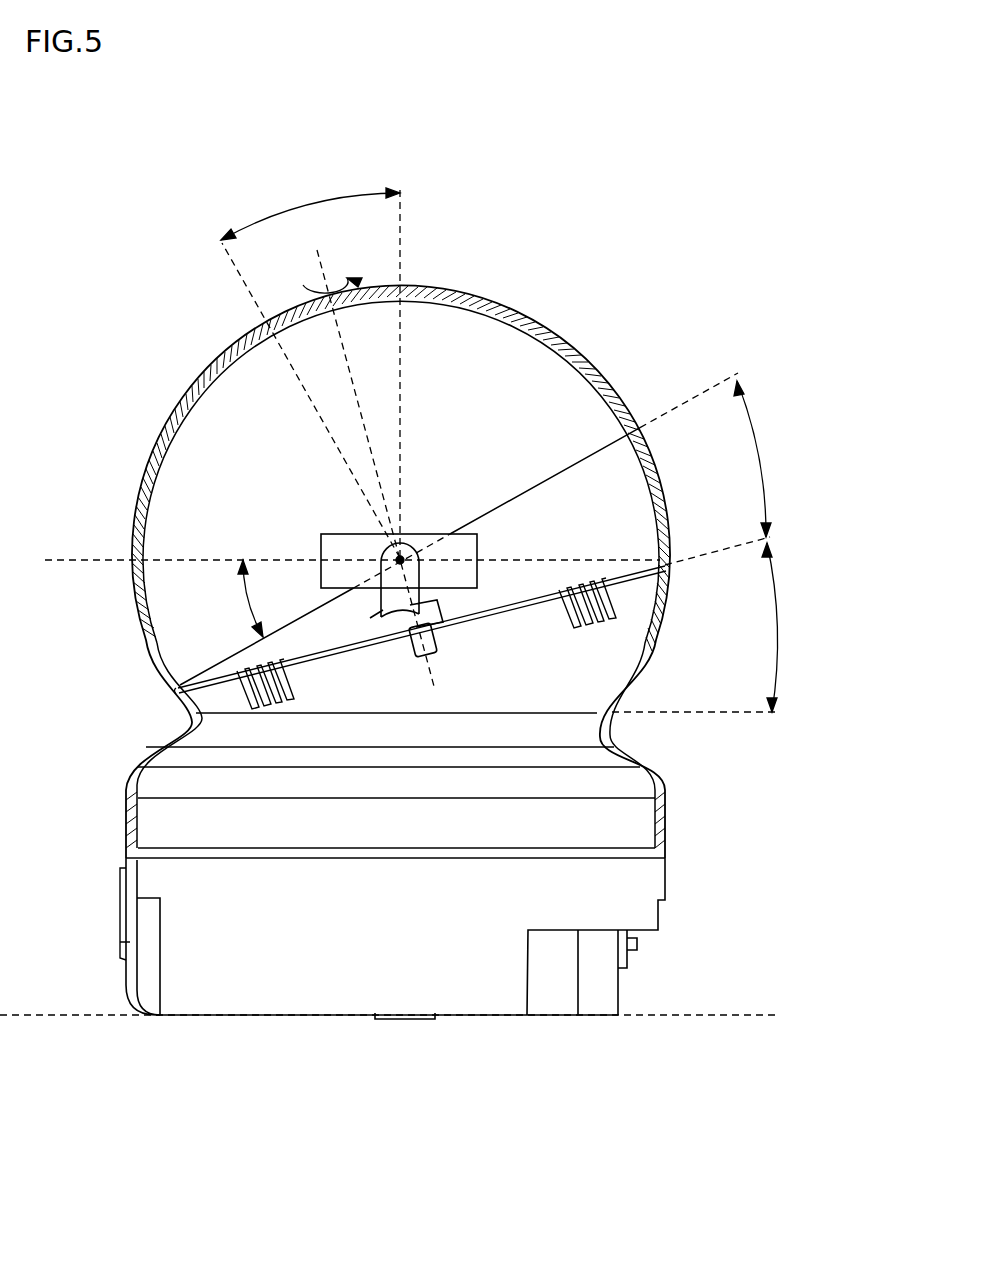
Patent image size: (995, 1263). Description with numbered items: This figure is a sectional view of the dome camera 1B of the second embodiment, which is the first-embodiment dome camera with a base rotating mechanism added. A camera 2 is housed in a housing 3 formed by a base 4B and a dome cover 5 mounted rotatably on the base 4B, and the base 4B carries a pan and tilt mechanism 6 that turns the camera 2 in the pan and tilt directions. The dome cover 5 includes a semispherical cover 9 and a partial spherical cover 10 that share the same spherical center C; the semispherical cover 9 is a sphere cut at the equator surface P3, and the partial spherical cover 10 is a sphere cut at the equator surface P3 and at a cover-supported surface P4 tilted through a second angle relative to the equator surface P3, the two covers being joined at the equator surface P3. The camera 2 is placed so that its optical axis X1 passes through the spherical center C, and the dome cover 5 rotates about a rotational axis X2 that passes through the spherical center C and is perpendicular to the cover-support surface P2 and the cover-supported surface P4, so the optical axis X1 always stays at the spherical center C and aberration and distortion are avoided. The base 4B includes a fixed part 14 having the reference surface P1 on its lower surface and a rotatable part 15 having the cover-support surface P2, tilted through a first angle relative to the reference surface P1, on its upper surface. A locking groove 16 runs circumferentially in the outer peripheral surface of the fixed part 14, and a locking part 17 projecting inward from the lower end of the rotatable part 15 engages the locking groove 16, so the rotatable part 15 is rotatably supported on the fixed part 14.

The dome camera 1B is at (643, 183).
The camera 2 is at (340, 534).
The housing 3 is at (275, 1032).
The base 4B is at (104, 893).
The dome cover 5 is at (467, 295).
The pan and tilt mechanism 6 is at (420, 573).
The semispherical cover 9 is at (525, 317).
The partial spherical cover 10 is at (668, 482).
The fixed part 14 is at (668, 888).
The rotatable part 15 is at (665, 778).
The locking groove 16 is at (137, 852).
The locking part 17 is at (145, 860).
The spherical center C is at (410, 535).
The optical axis X1 is at (333, 561).
The rotational axis X2 is at (369, 461).
The reference surface P1 is at (705, 1013).
The cover-support surface P2 is at (700, 552).
The equator surface P3 is at (705, 390).
The cover-supported surface P4 is at (708, 565).